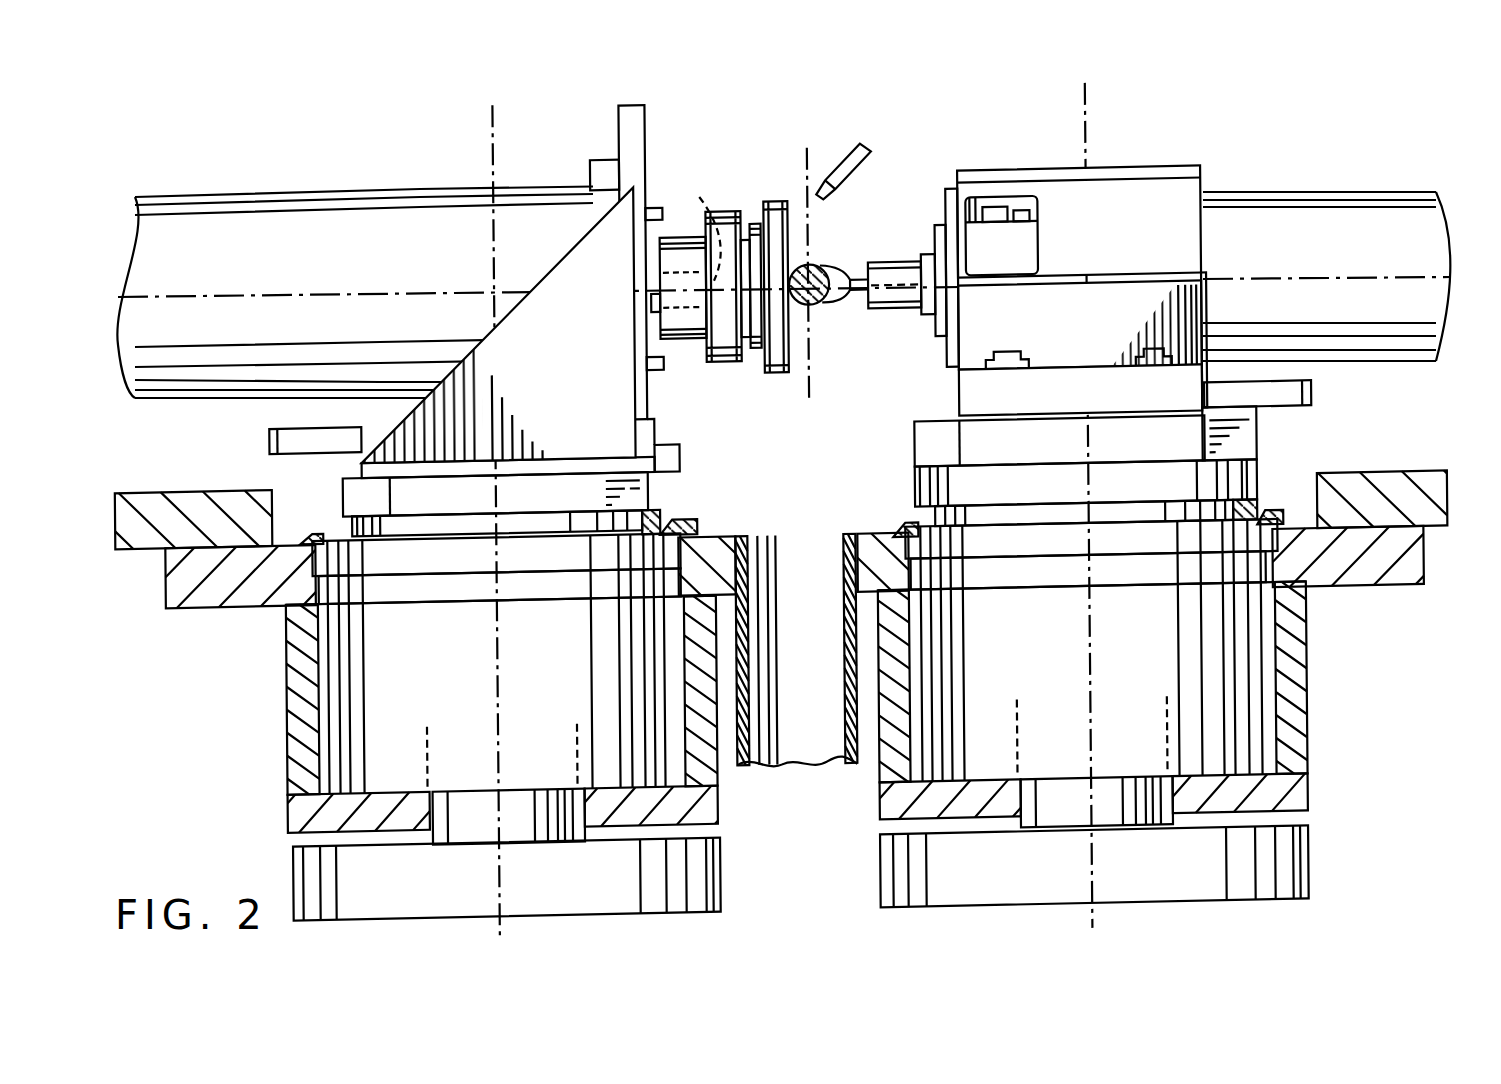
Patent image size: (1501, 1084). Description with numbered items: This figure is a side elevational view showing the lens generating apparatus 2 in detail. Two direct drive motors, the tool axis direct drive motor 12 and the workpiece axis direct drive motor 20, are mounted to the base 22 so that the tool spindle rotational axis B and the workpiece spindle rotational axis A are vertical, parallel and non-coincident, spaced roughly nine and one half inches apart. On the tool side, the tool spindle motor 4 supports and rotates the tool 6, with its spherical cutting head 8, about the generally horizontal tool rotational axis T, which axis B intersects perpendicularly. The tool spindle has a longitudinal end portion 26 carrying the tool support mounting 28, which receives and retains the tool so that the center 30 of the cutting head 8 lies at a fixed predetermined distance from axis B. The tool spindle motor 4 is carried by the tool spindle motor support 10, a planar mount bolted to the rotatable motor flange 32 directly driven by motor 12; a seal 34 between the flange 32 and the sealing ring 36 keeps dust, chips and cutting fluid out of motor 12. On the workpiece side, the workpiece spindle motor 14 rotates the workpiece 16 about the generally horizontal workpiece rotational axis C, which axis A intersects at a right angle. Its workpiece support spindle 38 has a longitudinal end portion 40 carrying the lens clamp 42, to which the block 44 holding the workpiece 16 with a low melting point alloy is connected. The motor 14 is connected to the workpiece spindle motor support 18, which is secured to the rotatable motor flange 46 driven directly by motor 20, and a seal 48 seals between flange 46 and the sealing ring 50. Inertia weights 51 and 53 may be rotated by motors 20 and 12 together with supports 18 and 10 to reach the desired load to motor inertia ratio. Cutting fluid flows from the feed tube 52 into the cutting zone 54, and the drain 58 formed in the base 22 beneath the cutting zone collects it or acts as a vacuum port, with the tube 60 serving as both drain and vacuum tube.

The lens generating apparatus 2 is at (1246, 164).
The tool spindle motor 4 is at (1256, 251).
The tool 6 is at (840, 316).
The spherical cutting head 8 is at (820, 262).
The tool spindle motor support 10 is at (1019, 404).
The tool axis direct drive motor 12 is at (1038, 672).
The workpiece spindle motor 14 is at (264, 251).
The workpiece 16 is at (782, 200).
The workpiece spindle motor support 18 is at (563, 402).
The workpiece axis direct drive motor 20 is at (431, 672).
The base 22 is at (222, 485).
The longitudinal end portion 26 is at (918, 260).
The tool support mounting 28 is at (890, 320).
The center 30 is at (838, 270).
The rotatable motor flange 32 is at (1113, 491).
The seal 34 is at (1248, 503).
The sealing ring 36 is at (1283, 513).
The workpiece support spindle 38 is at (655, 315).
The longitudinal end portion 40 is at (696, 228).
The lens clamp 42 is at (728, 358).
The block 44 is at (755, 235).
The rotatable motor flange 46 is at (531, 503).
The seal 48 is at (650, 516).
The sealing ring 50 is at (693, 524).
The inertia weight 51 is at (431, 885).
The feed tube 52 is at (858, 150).
The inertia weight 53 is at (1023, 875).
The cutting zone 54 is at (799, 322).
The drain 58 is at (802, 566).
The tube 60 is at (812, 762).
The workpiece spindle rotational axis A is at (490, 153).
The tool spindle rotational axis B is at (1088, 118).
The workpiece rotational axis C is at (420, 290).
The tool rotational axis T is at (1395, 272).